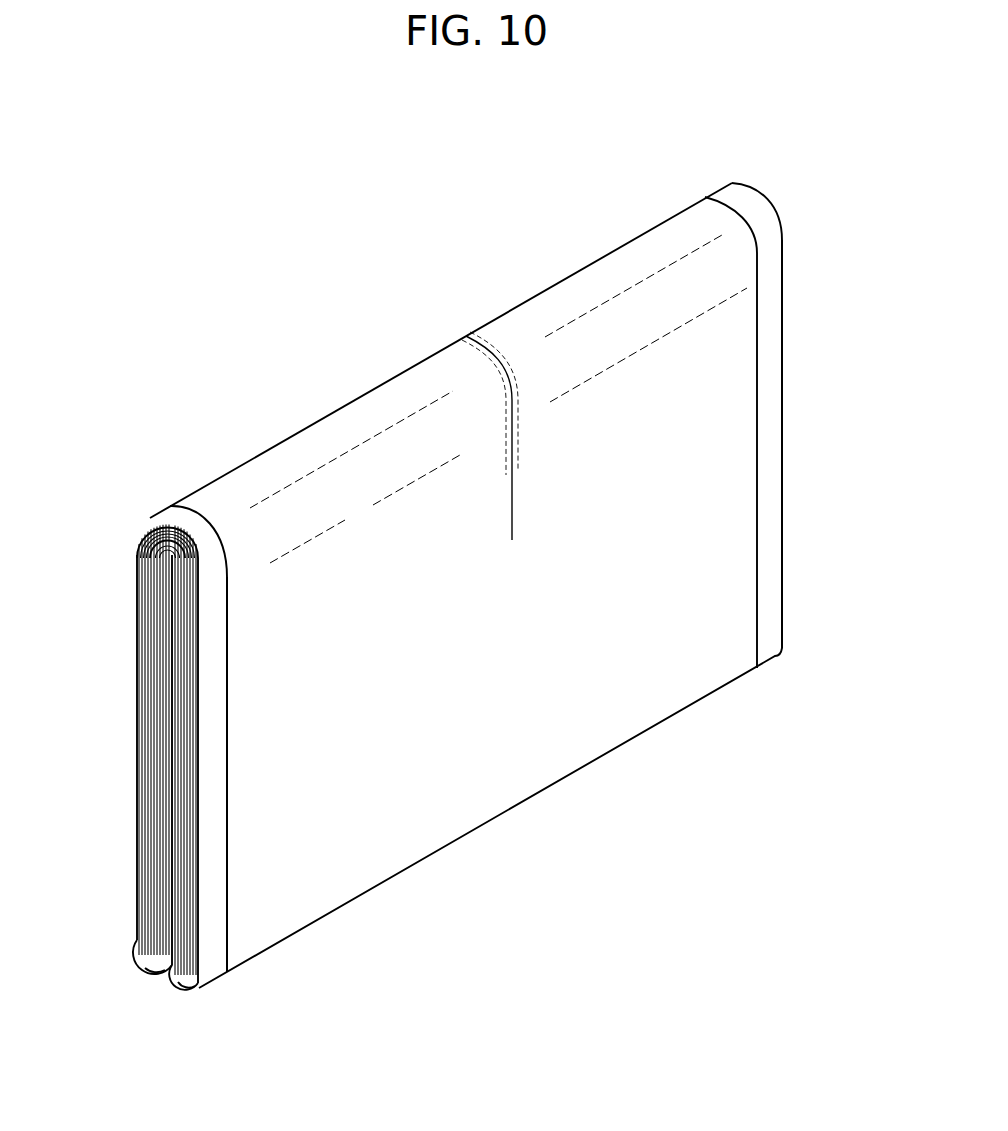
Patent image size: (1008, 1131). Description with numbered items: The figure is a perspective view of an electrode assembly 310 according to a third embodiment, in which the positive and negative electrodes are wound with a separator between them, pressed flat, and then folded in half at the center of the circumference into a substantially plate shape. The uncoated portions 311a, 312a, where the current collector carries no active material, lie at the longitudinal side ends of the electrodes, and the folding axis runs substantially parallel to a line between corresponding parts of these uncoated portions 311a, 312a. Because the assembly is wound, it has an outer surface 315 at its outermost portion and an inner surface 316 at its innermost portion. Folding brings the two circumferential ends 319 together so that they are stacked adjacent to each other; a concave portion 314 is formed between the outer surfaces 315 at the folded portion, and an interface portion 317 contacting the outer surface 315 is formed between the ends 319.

The electrode assembly 310 is at (337, 390).
The uncoated portion 312a is at (768, 410).
The uncoated portion 311a is at (215, 925).
The concave portion 314 is at (166, 574).
The outer surface 315 is at (270, 770).
The inner surface 316 is at (151, 661).
The interface portion 317 is at (167, 912).
The ends 319 is at (157, 972).